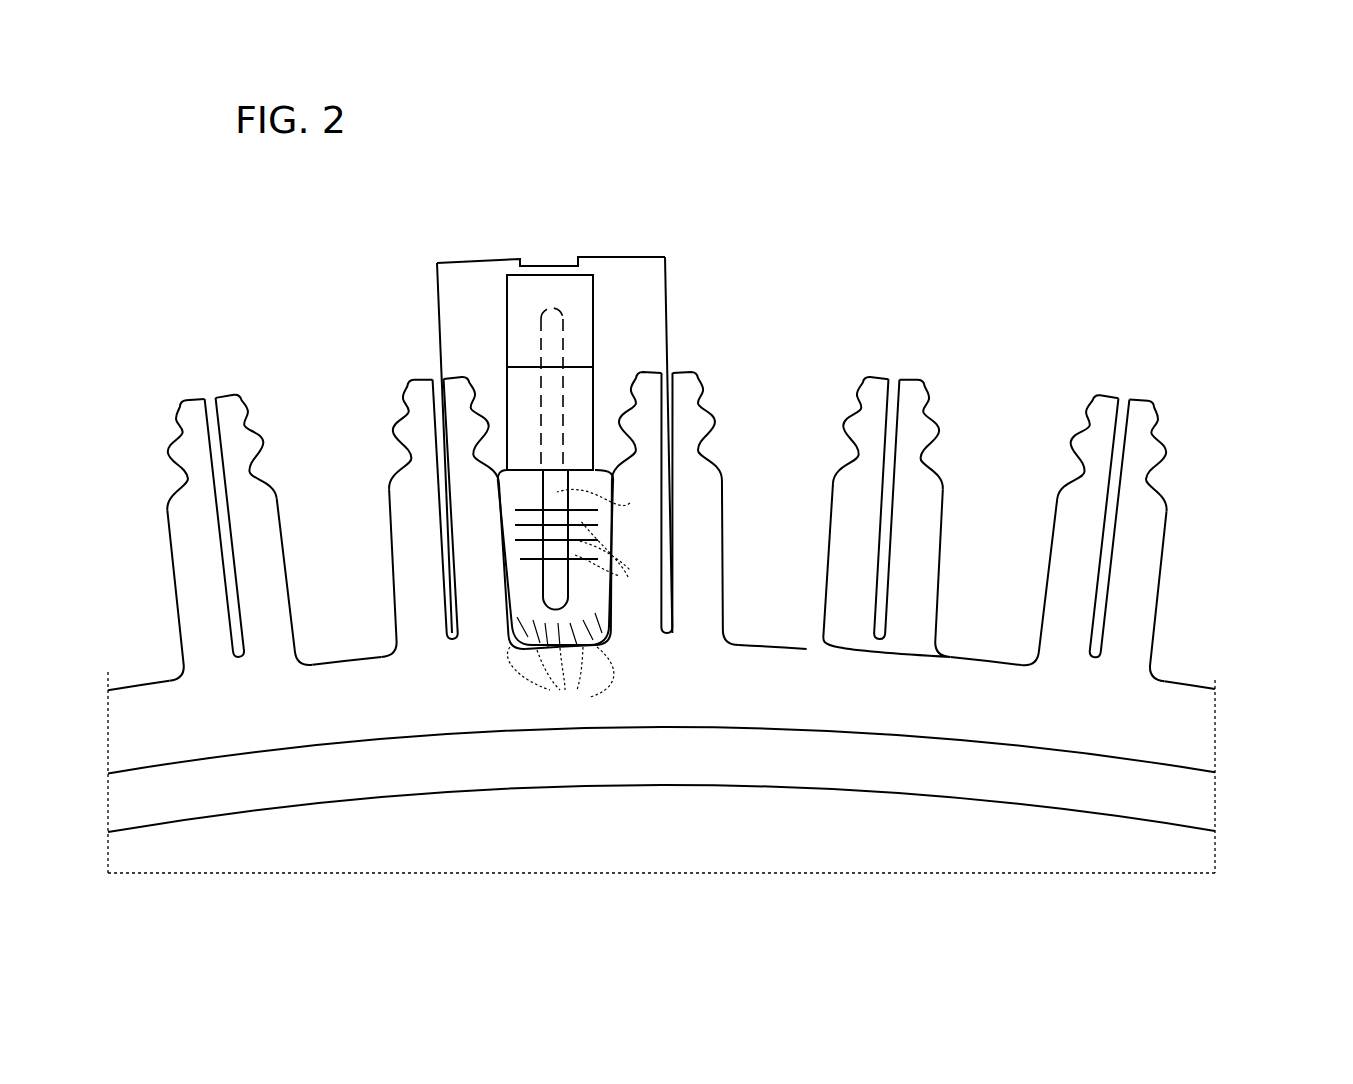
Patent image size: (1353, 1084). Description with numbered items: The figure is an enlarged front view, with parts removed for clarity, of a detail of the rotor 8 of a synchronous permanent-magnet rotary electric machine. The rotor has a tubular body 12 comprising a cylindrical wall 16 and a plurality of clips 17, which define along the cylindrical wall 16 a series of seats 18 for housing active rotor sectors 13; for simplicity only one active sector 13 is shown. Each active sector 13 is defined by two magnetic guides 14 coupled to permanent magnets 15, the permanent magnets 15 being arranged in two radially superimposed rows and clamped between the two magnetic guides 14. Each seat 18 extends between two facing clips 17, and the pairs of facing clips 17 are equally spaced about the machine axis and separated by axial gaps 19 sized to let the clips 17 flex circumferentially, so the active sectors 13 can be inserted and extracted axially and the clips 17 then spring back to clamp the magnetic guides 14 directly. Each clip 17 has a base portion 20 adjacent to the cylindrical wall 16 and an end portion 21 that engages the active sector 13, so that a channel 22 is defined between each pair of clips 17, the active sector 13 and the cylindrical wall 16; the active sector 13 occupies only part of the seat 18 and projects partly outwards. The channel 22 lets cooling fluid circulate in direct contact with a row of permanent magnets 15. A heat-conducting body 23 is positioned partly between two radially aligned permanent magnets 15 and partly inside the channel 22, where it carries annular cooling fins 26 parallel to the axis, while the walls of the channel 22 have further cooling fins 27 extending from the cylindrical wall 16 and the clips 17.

The rotor 8 is at (1135, 255).
The tubular body 12 is at (1250, 498).
The active rotor sector 13 is at (660, 228).
The magnetic guide 14 is at (453, 272).
The permanent magnet 15 is at (577, 380).
The cylindrical wall 16 is at (640, 705).
The clip 17 is at (177, 542).
The seat 18 is at (675, 302).
The axial gap 19 is at (207, 390).
The base portion 20 is at (160, 605).
The end portion 21 is at (155, 456).
The channel 22 is at (528, 597).
The heat-conducting body 23 is at (602, 493).
The cooling fins 26 is at (611, 559).
The cooling fins 27 is at (560, 669).